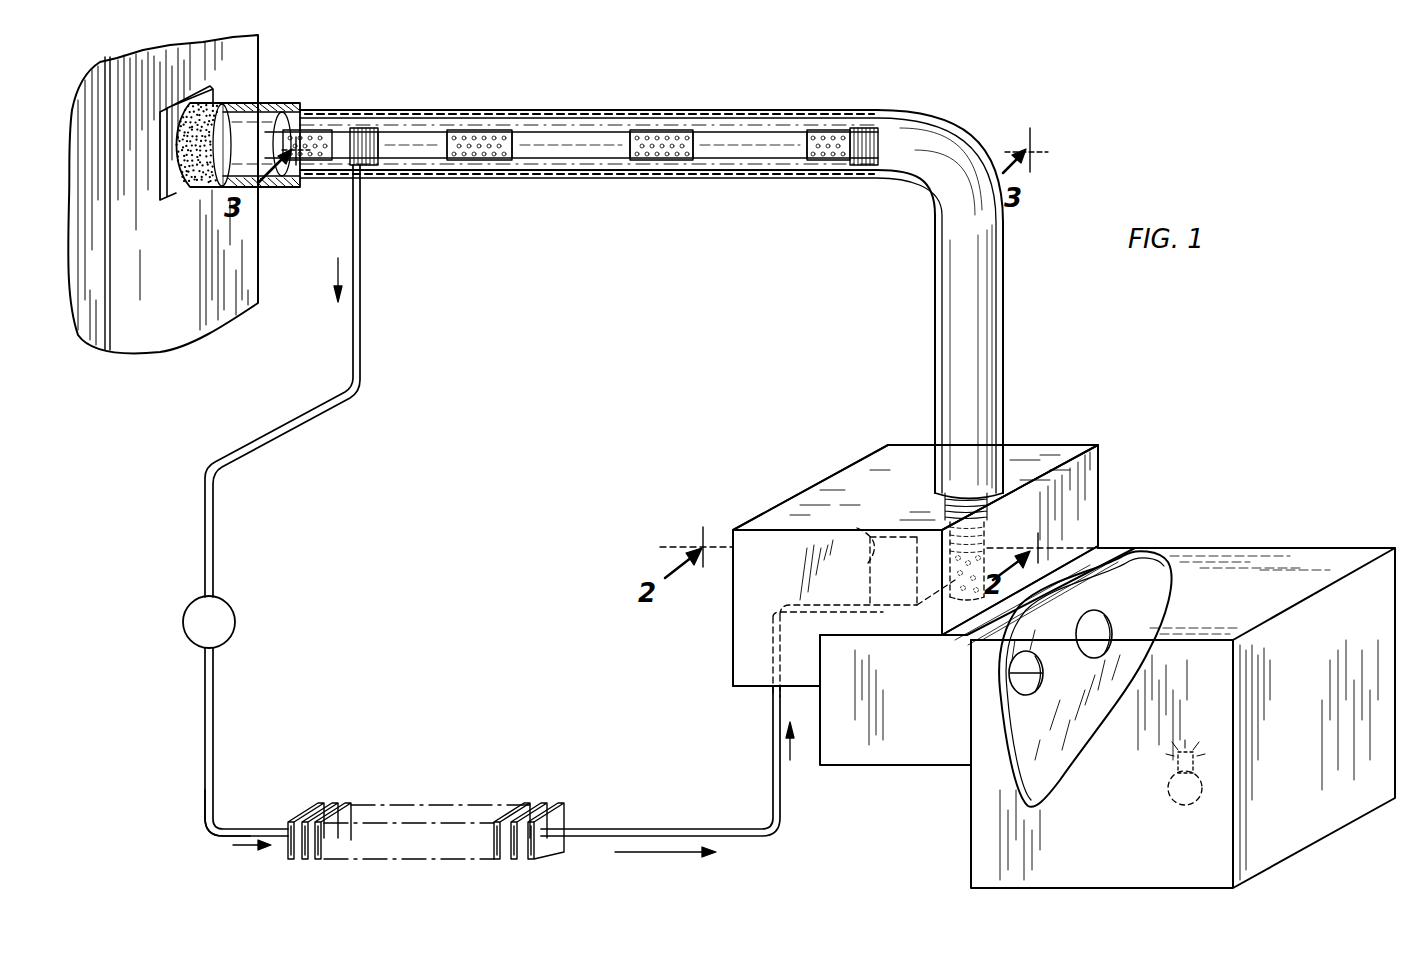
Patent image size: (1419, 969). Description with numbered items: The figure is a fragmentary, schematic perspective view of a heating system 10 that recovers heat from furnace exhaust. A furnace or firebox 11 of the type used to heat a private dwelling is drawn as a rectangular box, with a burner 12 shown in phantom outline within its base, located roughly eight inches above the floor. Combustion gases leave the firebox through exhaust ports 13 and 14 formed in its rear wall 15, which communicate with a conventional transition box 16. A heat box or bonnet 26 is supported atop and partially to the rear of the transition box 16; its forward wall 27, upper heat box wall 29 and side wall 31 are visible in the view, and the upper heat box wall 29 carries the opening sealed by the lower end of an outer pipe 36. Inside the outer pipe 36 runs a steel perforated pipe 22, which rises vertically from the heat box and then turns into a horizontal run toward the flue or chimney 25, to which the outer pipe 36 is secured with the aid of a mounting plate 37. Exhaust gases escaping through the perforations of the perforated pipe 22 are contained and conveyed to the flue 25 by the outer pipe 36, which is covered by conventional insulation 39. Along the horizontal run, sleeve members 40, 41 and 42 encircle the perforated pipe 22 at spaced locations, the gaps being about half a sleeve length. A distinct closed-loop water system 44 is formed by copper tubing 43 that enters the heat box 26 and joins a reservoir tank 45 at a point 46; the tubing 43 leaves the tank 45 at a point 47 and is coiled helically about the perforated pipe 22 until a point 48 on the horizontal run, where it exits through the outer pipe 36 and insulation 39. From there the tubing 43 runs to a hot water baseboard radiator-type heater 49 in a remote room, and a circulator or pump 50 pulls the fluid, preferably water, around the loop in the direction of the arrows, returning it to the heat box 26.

The heating system 10 is at (1100, 406).
The furnace or firebox 11 is at (1325, 556).
The burner 12 is at (1188, 806).
The exhaust port 13 is at (1030, 700).
The exhaust port 14 is at (1100, 608).
The rear wall 15 is at (1135, 565).
The transition box 16 is at (868, 752).
The perforated pipe 22 is at (822, 142).
The flue or chimney 25 is at (134, 350).
The heat box or bonnet 26 is at (757, 512).
The forward wall 27 is at (1096, 478).
The upper heat box wall 29 is at (855, 478).
The side wall 31 is at (735, 657).
The outer pipe 36 is at (522, 180).
The mounting plate 37 is at (178, 198).
The insulation 39 is at (266, 107).
The sleeve member 40 is at (742, 142).
The sleeve member 41 is at (530, 135).
The sleeve member 42 is at (413, 130).
The copper tubing 43 is at (847, 172).
The closed-loop water system 44 is at (194, 816).
The reservoir tank 45 is at (866, 532).
The tubing entry point 46 is at (892, 603).
The tubing exit point 47 is at (936, 550).
The coil termination point 48 is at (362, 172).
The hot water baseboard radiator-type heater 49 is at (504, 858).
The circulator or pump 50 is at (184, 614).